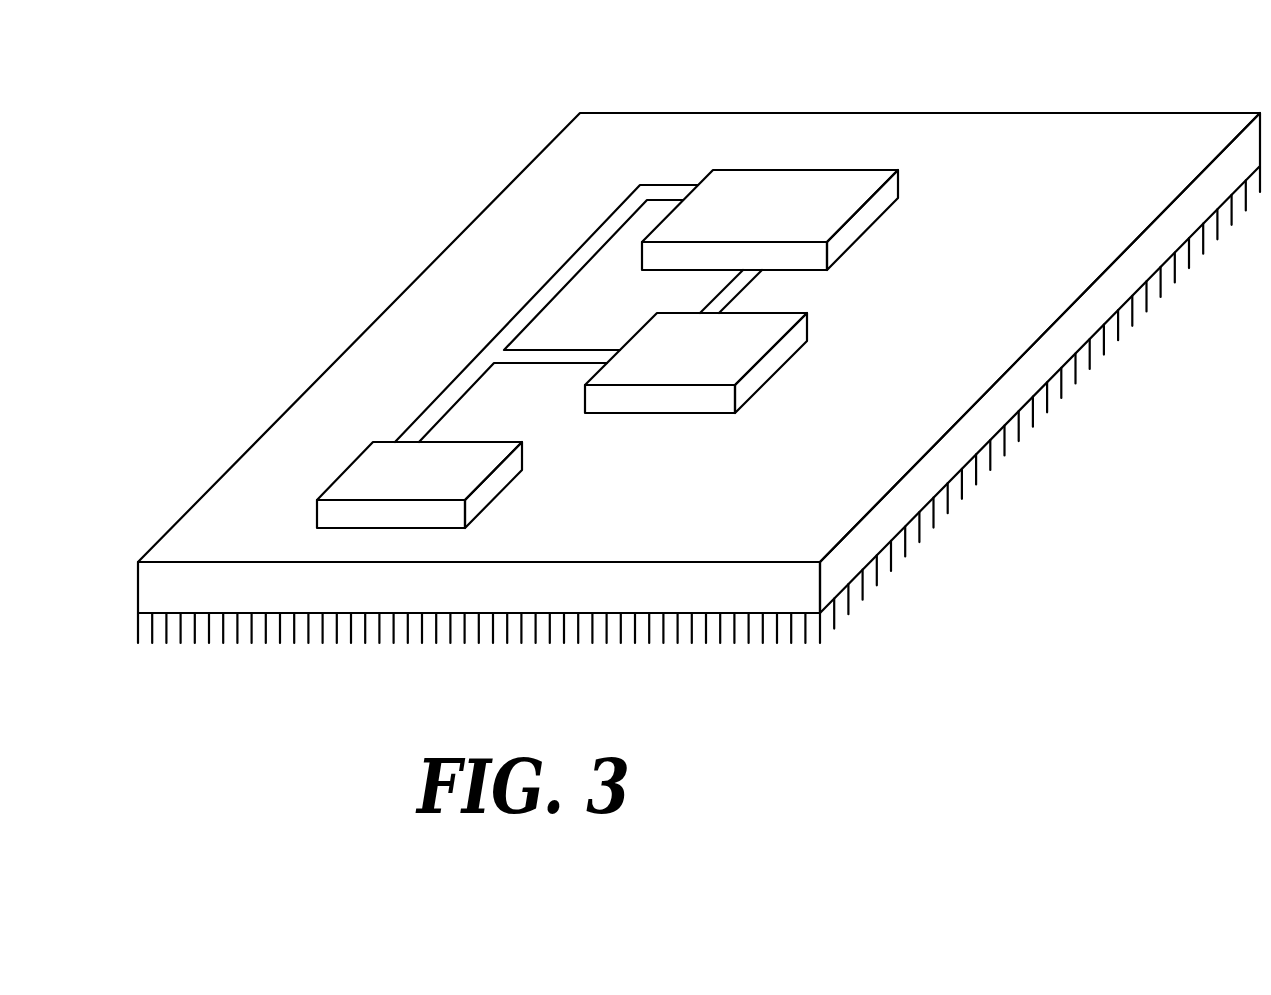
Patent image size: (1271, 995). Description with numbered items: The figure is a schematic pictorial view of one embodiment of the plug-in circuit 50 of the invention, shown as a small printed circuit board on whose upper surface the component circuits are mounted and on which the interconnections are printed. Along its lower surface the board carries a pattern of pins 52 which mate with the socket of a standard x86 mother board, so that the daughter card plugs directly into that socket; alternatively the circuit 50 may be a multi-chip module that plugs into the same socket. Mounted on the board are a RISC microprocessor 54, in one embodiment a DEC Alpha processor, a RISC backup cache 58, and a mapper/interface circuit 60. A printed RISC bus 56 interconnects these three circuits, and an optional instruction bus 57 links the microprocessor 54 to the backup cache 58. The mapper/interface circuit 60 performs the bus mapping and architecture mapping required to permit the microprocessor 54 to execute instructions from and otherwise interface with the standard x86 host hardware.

The plug-in circuit 50 is at (835, 112).
The pins 52 is at (1108, 392).
The RISC microprocessor 54 is at (862, 220).
The RISC bus 56 is at (535, 290).
The instruction bus 57 is at (757, 283).
The RISC backup cache 58 is at (773, 357).
The mapper/interface circuit 60 is at (493, 485).